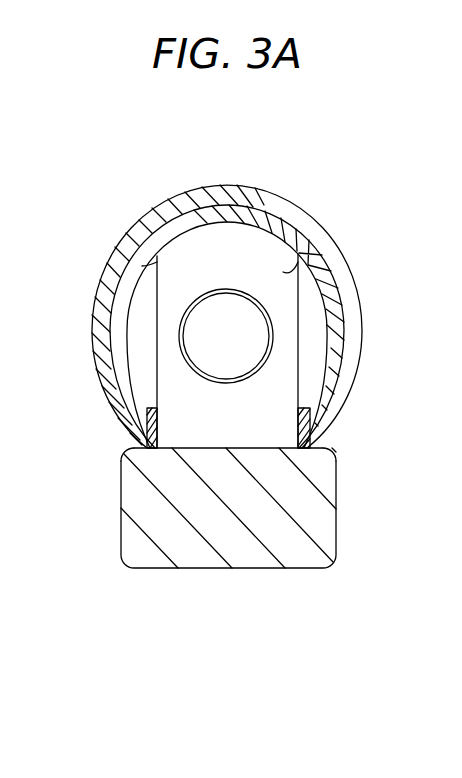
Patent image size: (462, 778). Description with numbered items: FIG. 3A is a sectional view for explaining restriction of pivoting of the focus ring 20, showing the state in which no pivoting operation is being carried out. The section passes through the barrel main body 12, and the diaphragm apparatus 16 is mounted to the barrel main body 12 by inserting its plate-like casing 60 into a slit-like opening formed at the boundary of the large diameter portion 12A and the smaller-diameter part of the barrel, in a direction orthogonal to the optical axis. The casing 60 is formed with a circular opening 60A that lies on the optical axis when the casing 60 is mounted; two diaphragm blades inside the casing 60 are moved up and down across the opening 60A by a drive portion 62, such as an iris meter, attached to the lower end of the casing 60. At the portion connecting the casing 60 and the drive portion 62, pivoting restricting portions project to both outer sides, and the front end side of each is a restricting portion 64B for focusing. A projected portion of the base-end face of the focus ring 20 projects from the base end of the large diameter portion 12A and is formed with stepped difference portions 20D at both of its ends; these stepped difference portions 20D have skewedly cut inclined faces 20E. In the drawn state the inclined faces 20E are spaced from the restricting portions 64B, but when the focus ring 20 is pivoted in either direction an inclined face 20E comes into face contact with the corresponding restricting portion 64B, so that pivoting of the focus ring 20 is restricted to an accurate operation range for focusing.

The focus ring 20 is at (186, 184).
The barrel main body 12 is at (225, 303).
The large diameter portion 12A is at (244, 204).
The casing 60 is at (306, 262).
The opening 60A is at (248, 302).
The stepped difference portions 20D is at (372, 368).
The inclined faces 20E is at (99, 374).
The diaphragm apparatus 16 is at (263, 581).
The drive portion 62 is at (176, 559).
The restricting portion for focusing 64B is at (146, 448).